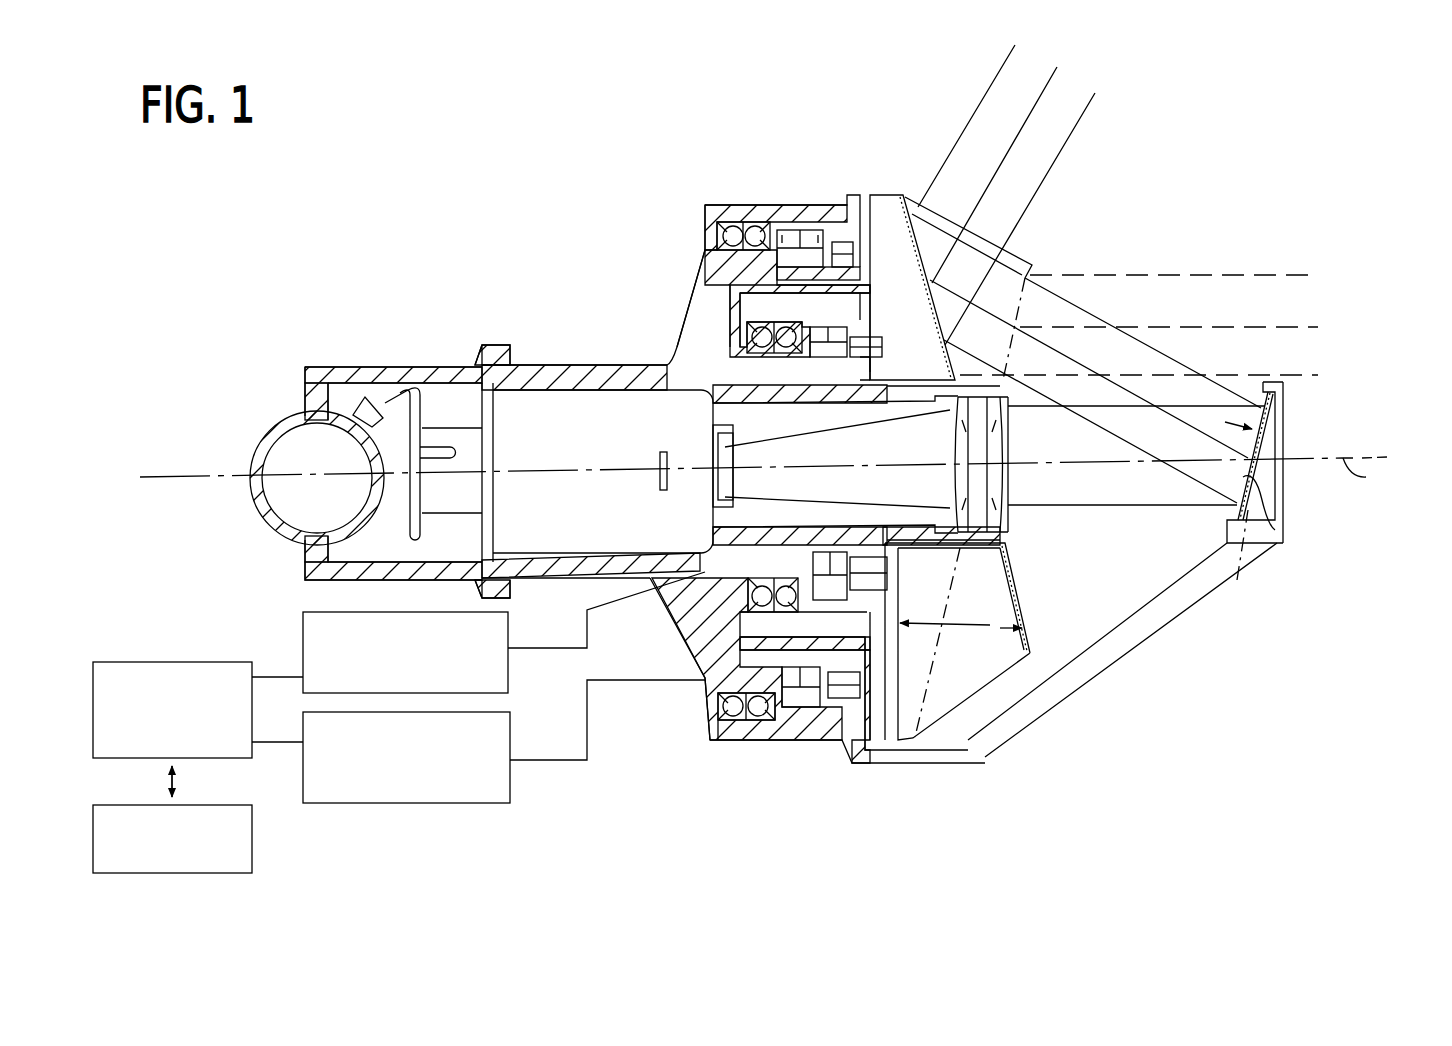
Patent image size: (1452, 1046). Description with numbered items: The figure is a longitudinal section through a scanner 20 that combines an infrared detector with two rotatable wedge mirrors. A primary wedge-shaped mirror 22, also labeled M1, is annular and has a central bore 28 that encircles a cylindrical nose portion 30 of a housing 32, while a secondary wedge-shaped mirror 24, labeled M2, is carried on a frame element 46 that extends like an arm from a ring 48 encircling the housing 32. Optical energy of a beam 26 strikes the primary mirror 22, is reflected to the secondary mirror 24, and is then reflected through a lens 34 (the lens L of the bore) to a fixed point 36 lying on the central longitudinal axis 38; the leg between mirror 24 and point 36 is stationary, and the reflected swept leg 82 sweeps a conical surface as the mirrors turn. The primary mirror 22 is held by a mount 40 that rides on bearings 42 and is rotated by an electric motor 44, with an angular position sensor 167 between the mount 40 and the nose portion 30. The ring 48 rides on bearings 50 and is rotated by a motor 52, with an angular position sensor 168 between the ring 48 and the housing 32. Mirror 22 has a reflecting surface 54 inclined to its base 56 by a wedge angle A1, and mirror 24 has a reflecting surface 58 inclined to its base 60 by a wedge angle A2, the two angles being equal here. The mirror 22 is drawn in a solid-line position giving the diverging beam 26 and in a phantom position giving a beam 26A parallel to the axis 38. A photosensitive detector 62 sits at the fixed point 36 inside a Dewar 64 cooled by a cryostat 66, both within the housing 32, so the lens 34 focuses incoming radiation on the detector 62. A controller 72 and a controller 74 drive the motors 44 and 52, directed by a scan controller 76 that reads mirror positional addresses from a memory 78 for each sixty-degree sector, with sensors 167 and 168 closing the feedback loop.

The scanner 20 is at (670, 256).
The primary wedge-shaped mirror 22 is at (1017, 610).
The secondary wedge-shaped mirror 24 is at (1235, 515).
The beam 26 is at (1064, 150).
The beam 26A is at (1152, 272).
The central bore 28 is at (1010, 522).
The cylindrical nose portion 30 is at (977, 547).
The housing 32 is at (680, 326).
The lens 34 is at (1010, 478).
The fixed point 36 is at (660, 484).
The central longitudinal axis 38 is at (1370, 455).
The mount 40 is at (887, 196).
The bearings 42 is at (750, 322).
The electric motor 44 is at (833, 378).
The frame element 46 is at (1125, 660).
The ring 48 is at (790, 740).
The bearings 50 is at (735, 723).
The motor 52 is at (797, 240).
The reflecting surface 54 is at (1035, 628).
The base 56 is at (895, 733).
The reflecting surface 58 is at (1250, 522).
The base 60 is at (1285, 513).
The photosensitive detector 62 is at (660, 452).
The Dewar 64 is at (547, 407).
The cryostat 66 is at (280, 455).
The controller 72 is at (510, 682).
The controller 74 is at (510, 800).
The scan controller 76 is at (183, 660).
The memory 78 is at (255, 848).
The swept leg 82 is at (1120, 440).
The angular position sensor 167 is at (872, 335).
The angular position sensor 168 is at (843, 240).
The lens L is at (1008, 440).
The wedge angle A1 is at (961, 642).
The wedge angle A2 is at (1288, 427).
The primary mirror legend M1 is at (955, 708).
The secondary mirror legend M2 is at (1251, 546).